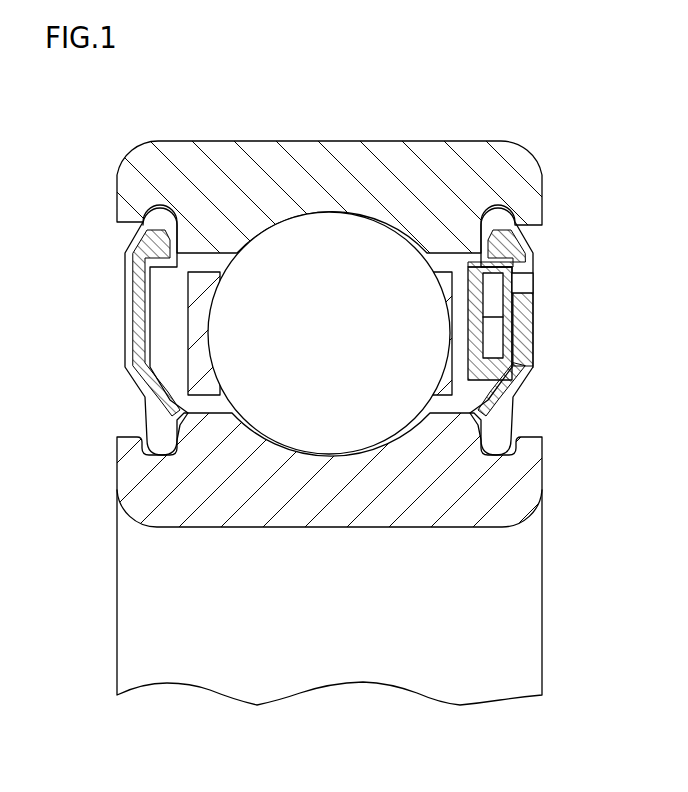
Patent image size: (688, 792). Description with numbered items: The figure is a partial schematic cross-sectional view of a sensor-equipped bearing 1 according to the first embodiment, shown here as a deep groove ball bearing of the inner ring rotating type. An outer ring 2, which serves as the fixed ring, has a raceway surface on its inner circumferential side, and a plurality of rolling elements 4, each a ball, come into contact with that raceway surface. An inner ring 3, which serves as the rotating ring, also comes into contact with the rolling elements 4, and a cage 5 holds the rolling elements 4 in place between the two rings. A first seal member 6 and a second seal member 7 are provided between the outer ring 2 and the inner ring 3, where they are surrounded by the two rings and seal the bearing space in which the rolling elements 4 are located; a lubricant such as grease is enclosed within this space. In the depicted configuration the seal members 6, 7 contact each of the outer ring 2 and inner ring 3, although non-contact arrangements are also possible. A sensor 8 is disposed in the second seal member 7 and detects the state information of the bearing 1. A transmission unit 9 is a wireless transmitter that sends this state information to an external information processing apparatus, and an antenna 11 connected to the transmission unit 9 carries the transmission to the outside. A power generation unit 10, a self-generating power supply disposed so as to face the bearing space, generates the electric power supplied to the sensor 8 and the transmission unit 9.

The bearing 1 is at (125, 130).
The outer ring 2 is at (392, 168).
The inner ring 3 is at (135, 478).
The rolling element 4 is at (276, 265).
The cage 5 is at (188, 312).
The first seal member 6 is at (133, 330).
The second seal member 7 is at (518, 255).
The sensor 8 is at (505, 328).
The transmission unit 9 is at (520, 303).
The power generation unit 10 is at (520, 387).
The antenna 11 is at (530, 281).